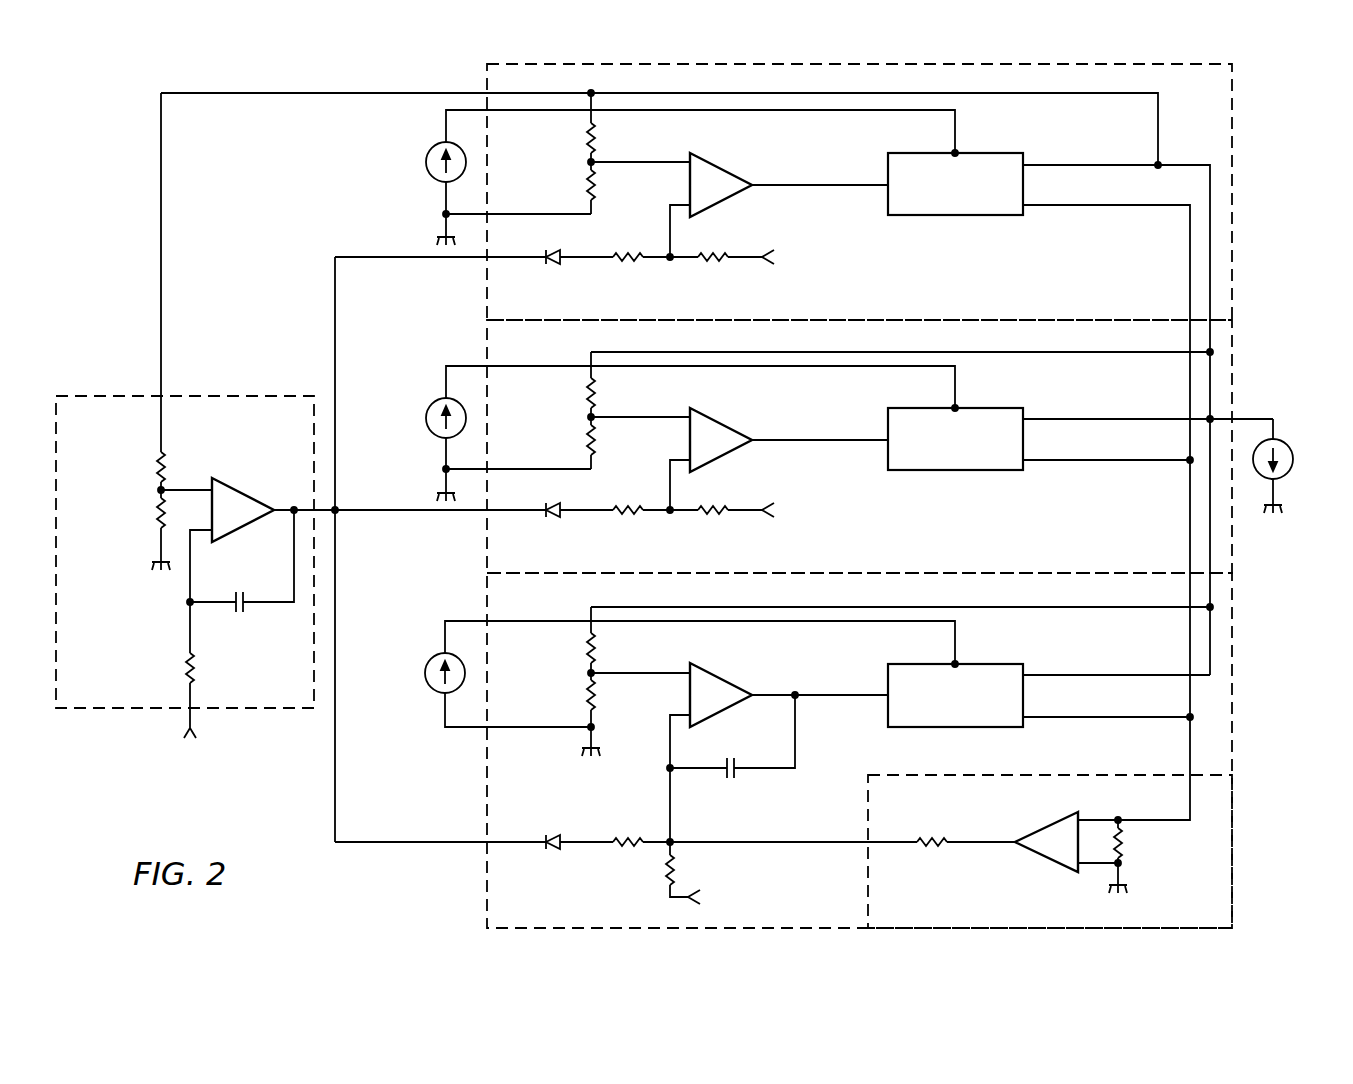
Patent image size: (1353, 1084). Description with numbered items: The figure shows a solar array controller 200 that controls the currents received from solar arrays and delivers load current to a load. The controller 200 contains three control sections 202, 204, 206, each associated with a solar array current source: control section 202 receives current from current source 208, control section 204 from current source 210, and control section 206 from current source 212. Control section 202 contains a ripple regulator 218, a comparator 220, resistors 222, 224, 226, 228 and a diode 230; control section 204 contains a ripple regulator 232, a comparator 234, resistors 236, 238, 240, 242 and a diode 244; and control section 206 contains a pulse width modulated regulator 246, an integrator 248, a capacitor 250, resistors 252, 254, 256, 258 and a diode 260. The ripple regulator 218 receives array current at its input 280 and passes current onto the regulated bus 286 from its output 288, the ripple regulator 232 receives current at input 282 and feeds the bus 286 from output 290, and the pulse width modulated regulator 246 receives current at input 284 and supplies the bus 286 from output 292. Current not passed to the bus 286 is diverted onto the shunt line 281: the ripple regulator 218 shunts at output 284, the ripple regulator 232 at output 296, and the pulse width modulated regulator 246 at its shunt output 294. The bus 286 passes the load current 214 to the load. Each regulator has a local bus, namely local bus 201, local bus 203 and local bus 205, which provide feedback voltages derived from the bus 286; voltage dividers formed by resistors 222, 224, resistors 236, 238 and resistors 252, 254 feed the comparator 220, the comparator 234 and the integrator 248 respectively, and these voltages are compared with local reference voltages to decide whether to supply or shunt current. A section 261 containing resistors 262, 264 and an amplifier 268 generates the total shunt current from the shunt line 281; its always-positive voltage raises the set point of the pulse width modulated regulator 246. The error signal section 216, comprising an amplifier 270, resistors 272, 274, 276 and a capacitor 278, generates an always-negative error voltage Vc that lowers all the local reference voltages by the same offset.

The controller 200 is at (372, 857).
The local bus 201 is at (159, 192).
The control section 202 is at (1233, 186).
The local bus 203 is at (1125, 356).
The control section 204 is at (1233, 384).
The local bus 205 is at (1127, 611).
The control section 206 is at (549, 902).
The current source 208 is at (431, 145).
The current source 210 is at (431, 402).
The current source 212 is at (431, 657).
The current source 214 is at (1290, 445).
The error signal section 216 is at (117, 395).
The ripple regulator 218 is at (886, 205).
The comparator 220 is at (725, 204).
The resistor 222 is at (584, 140).
The resistor 224 is at (584, 185).
The resistor 226 is at (710, 266).
The resistor 228 is at (626, 266).
The diode 230 is at (553, 266).
The ripple regulator 232 is at (886, 460).
The comparator 234 is at (725, 459).
The resistor 236 is at (584, 395).
The resistor 238 is at (584, 440).
The resistor 240 is at (626, 521).
The resistor 242 is at (710, 521).
The diode 244 is at (553, 521).
The pulse width modulated regulator 246 is at (886, 716).
The integrator 248 is at (725, 714).
The capacitor 250 is at (742, 777).
The resistor 252 is at (584, 650).
The resistor 254 is at (584, 695).
The resistor 256 is at (627, 833).
The resistor 258 is at (662, 875).
The diode 260 is at (552, 833).
The section 261 is at (935, 902).
The resistor 262 is at (931, 833).
The resistor 264 is at (1127, 845).
The amplifier 268 is at (1052, 857).
The amplifier 270 is at (243, 531).
The resistor 272 is at (183, 670).
The resistor 274 is at (153, 522).
The resistor 276 is at (153, 456).
The capacitor 278 is at (247, 610).
The input 280 is at (960, 150).
The shunt line 281 is at (1186, 290).
The input 282 is at (960, 407).
The input 284 is at (1028, 218).
The bus 286 is at (1176, 160).
The output 288 is at (1027, 161).
The output 290 is at (1027, 418).
The output 292 is at (1027, 674).
The shunt current output of PWM regulator 294 is at (1028, 731).
The output 296 is at (1028, 474).